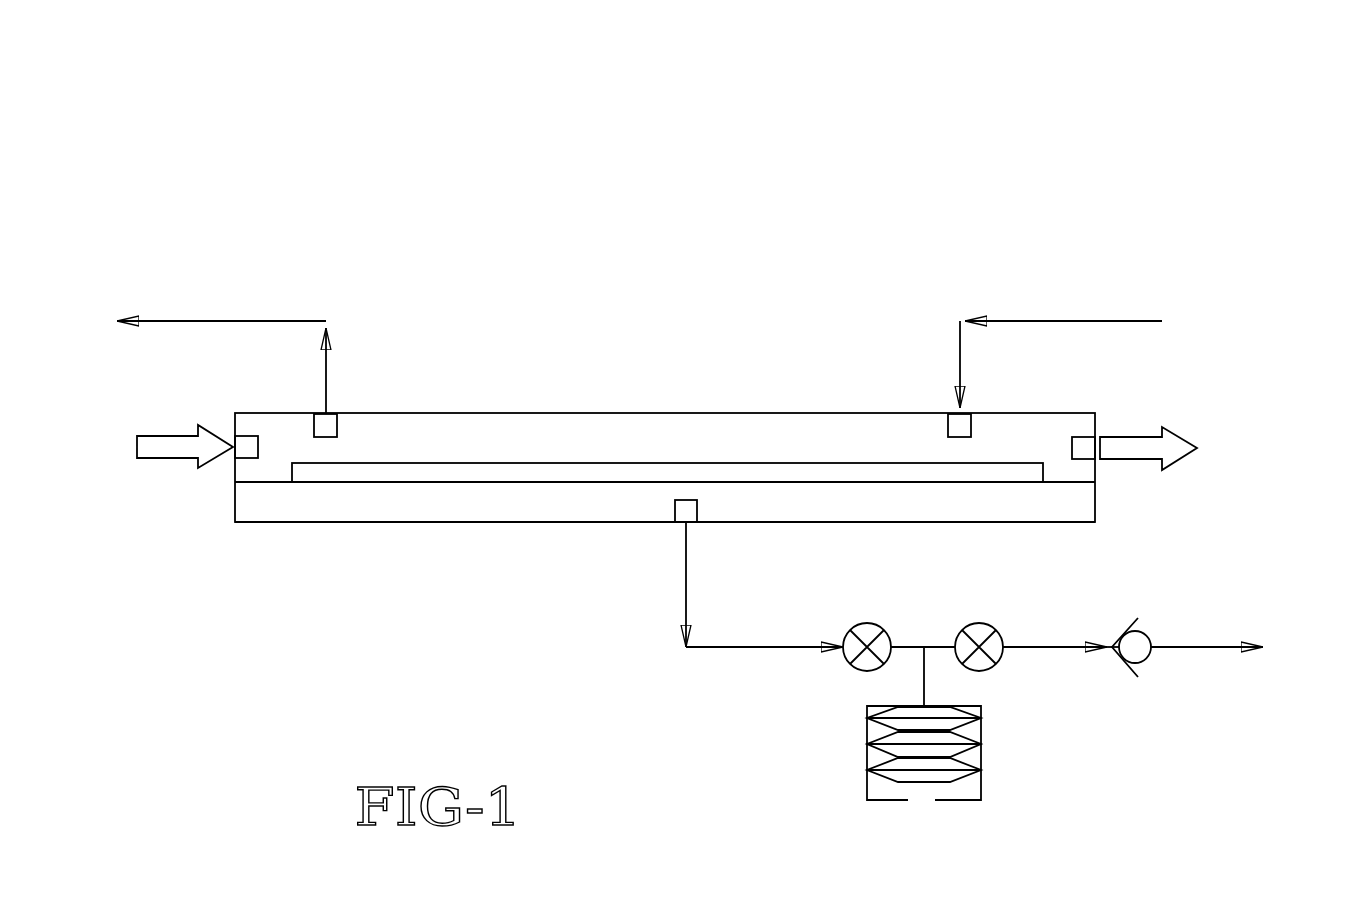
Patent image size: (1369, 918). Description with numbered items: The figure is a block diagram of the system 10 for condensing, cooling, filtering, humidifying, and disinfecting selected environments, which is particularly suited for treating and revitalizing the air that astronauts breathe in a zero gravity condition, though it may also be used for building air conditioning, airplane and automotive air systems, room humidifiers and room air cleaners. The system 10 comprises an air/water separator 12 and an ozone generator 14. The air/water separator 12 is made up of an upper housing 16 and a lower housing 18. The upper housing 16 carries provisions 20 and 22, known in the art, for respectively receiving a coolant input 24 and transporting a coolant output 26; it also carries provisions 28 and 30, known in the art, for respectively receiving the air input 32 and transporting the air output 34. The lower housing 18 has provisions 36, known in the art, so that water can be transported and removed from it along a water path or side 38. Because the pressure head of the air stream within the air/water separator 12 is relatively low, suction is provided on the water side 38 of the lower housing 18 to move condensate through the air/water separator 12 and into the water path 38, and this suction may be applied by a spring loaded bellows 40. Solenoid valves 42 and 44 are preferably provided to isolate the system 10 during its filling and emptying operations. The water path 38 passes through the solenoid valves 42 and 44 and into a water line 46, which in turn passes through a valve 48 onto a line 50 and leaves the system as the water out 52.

The system 10 is at (555, 207).
The air/water separator 12 is at (660, 357).
The ozone generator 14 is at (515, 470).
The upper housing 16 is at (517, 428).
The lower housing 18 is at (360, 512).
The provision 20 is at (948, 430).
The provision 22 is at (338, 427).
The coolant input 24 is at (1162, 321).
The coolant output 26 is at (197, 321).
The provision 28 is at (250, 436).
The provision 30 is at (1073, 440).
The air input 32 is at (172, 433).
The air output 34 is at (1128, 437).
The provisions 36 is at (697, 505).
The water path 38 is at (757, 650).
The spring loaded bellows 40 is at (981, 760).
The solenoid valve 42 is at (880, 625).
The solenoid valve 44 is at (968, 625).
The water line 46 is at (1052, 647).
The valve 48 is at (1143, 630).
The line 50 is at (1227, 647).
The water out 52 is at (1170, 648).